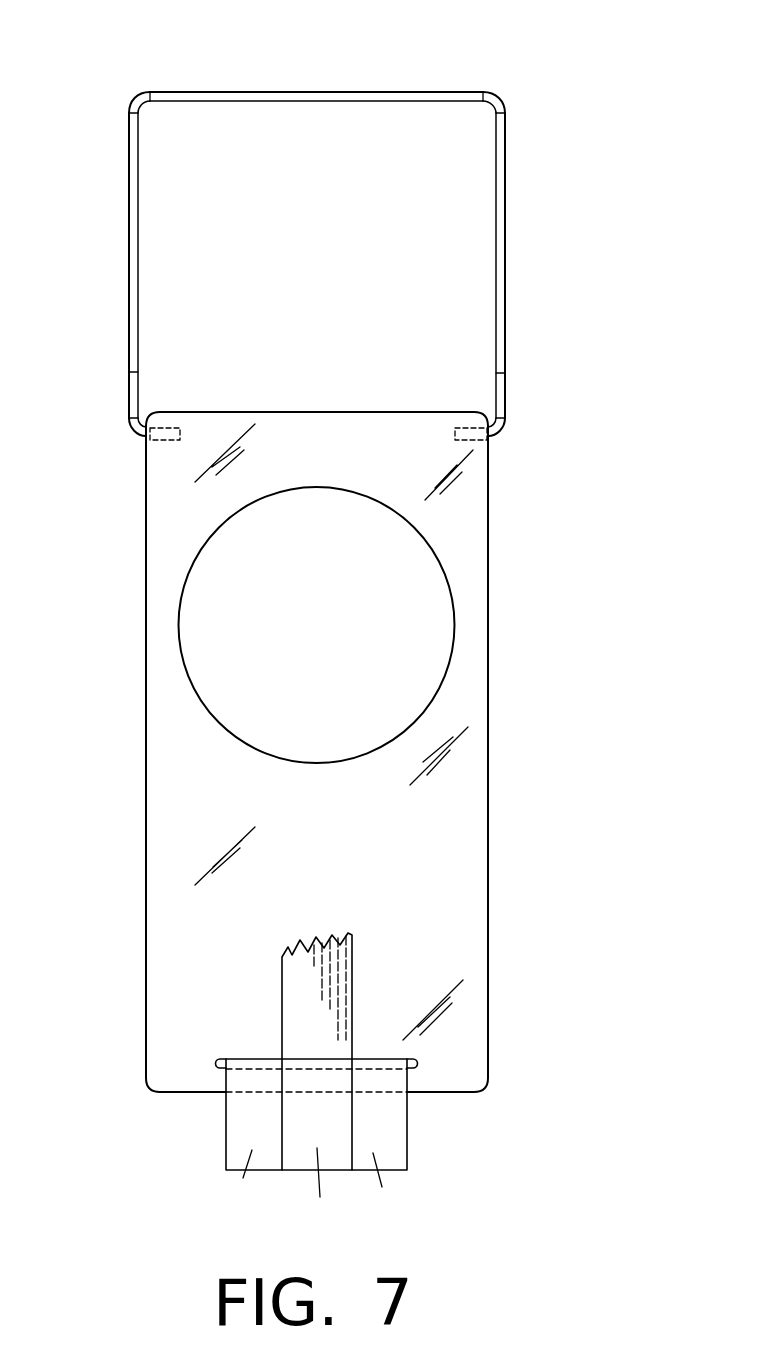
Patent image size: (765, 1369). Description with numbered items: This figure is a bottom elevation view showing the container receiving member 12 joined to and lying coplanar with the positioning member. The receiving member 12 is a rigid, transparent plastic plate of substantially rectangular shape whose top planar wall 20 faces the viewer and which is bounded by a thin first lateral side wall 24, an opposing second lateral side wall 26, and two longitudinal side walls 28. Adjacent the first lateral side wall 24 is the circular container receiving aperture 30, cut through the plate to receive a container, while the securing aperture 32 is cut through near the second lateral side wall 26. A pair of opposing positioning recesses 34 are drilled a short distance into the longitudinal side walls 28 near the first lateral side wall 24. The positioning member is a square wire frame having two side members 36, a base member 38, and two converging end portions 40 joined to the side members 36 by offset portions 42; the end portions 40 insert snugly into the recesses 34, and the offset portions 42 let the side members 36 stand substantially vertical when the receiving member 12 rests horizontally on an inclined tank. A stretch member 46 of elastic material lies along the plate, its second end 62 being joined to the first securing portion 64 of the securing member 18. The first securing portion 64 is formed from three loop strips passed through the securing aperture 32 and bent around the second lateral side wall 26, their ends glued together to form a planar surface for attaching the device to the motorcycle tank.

The container receiving member 12 is at (472, 650).
The securing member 18 is at (408, 1143).
The top planar wall 20 is at (172, 724).
The first lateral side wall 24 is at (282, 412).
The second lateral side wall 26 is at (190, 1093).
The longitudinal side walls 28 is at (147, 835).
The container receiving aperture 30 is at (302, 582).
The securing aperture 32 is at (218, 1065).
The positioning recesses 34 is at (173, 440).
The side members 36 is at (130, 243).
The base member 38 is at (265, 92).
The end portions 40 is at (136, 433).
The offset portions 42 is at (124, 388).
The stretch member 46 is at (400, 876).
The second end 62 is at (310, 1053).
The first securing portion 64 is at (243, 1178).